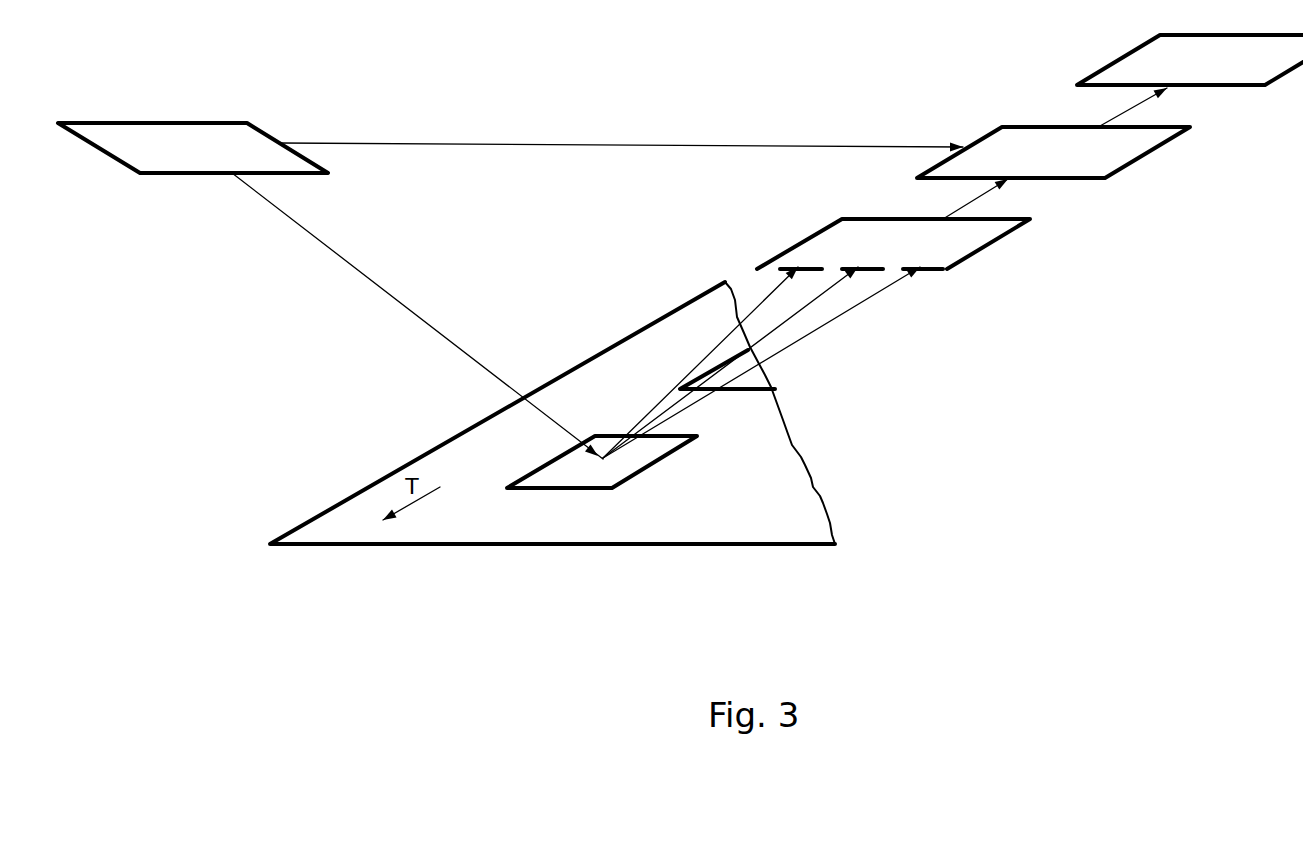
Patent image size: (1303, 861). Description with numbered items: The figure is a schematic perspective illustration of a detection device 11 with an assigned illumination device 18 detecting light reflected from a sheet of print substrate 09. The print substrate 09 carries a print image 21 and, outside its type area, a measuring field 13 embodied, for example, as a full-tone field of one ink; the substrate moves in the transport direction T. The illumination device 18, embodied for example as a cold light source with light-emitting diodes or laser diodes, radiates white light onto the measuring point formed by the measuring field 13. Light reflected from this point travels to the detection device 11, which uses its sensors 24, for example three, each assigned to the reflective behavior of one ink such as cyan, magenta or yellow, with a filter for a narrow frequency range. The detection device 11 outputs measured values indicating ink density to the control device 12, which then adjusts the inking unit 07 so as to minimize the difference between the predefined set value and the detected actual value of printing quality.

The inking unit 07 is at (1190, 60).
The print substrate 09 is at (552, 413).
The detection device 11 is at (893, 244).
The control device 12 is at (1053, 152).
The measuring field 13 is at (586, 478).
The illumination device 18 is at (193, 148).
The print image 21 is at (757, 382).
The sensor 24 is at (857, 262).